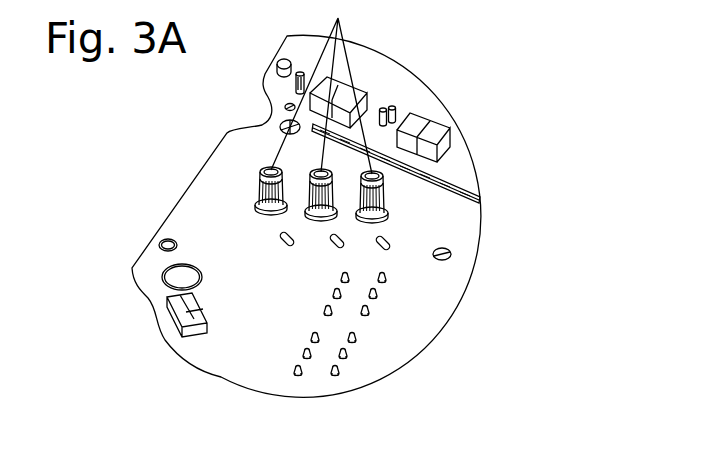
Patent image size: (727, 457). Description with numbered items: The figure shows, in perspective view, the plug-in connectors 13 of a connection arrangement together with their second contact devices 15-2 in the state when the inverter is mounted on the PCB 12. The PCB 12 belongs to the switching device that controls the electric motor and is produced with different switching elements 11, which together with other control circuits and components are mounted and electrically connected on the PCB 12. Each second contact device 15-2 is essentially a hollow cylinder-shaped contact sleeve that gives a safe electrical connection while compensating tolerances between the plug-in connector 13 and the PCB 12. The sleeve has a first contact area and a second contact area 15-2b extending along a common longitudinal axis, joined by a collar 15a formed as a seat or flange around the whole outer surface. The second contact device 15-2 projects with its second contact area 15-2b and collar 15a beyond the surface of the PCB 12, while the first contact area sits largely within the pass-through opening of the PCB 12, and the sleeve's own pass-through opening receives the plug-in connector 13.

The switching element 11 is at (415, 122).
The PCB 12 is at (148, 265).
The plug-in connector 13 is at (321, 87).
The second contact device 15-2 is at (238, 193).
The second contact area 15-2b is at (258, 187).
The collar 15a is at (258, 206).